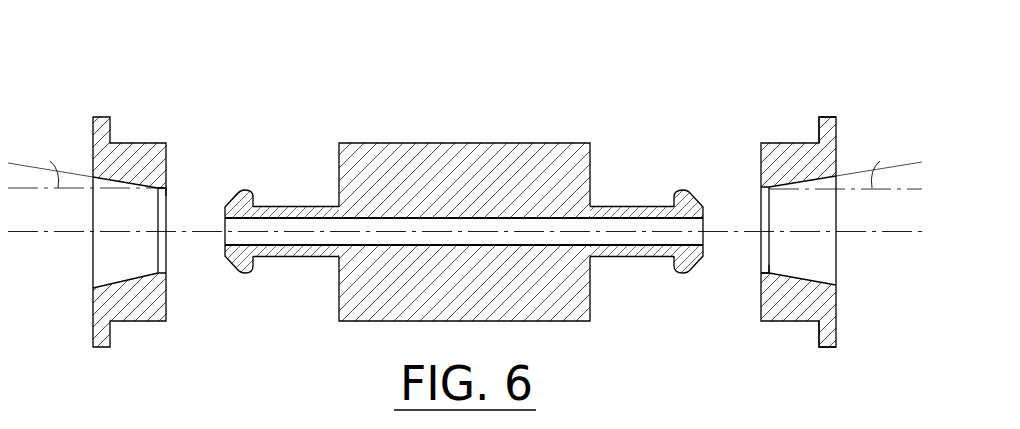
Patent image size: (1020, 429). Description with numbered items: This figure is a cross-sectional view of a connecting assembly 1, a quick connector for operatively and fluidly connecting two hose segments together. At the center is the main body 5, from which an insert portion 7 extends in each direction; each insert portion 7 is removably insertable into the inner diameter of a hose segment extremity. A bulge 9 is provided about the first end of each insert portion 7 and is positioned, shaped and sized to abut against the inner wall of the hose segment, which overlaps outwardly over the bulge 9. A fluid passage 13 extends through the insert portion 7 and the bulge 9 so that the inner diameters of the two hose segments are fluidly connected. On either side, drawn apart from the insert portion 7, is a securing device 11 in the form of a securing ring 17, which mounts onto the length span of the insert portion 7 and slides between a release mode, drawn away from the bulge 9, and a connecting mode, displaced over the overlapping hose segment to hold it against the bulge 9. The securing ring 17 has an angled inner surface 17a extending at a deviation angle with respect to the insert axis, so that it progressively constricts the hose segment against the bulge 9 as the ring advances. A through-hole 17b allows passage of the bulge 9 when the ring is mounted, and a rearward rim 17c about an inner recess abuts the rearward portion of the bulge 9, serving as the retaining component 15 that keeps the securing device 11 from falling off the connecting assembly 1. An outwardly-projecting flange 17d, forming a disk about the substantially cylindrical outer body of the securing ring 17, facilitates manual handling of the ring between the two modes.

The connecting assembly 1 is at (632, 43).
The main body 5 is at (562, 142).
The insert portion 7 is at (268, 205).
The bulge 9 is at (230, 184).
The securing device 11 is at (130, 90).
The fluid passage 13 is at (684, 237).
The retaining component 15 is at (168, 187).
The securing ring 17 is at (802, 88).
The inner surface 17a is at (125, 183).
The through-hole 17b is at (163, 243).
The rim 17c is at (772, 272).
The flange 17d is at (837, 125).